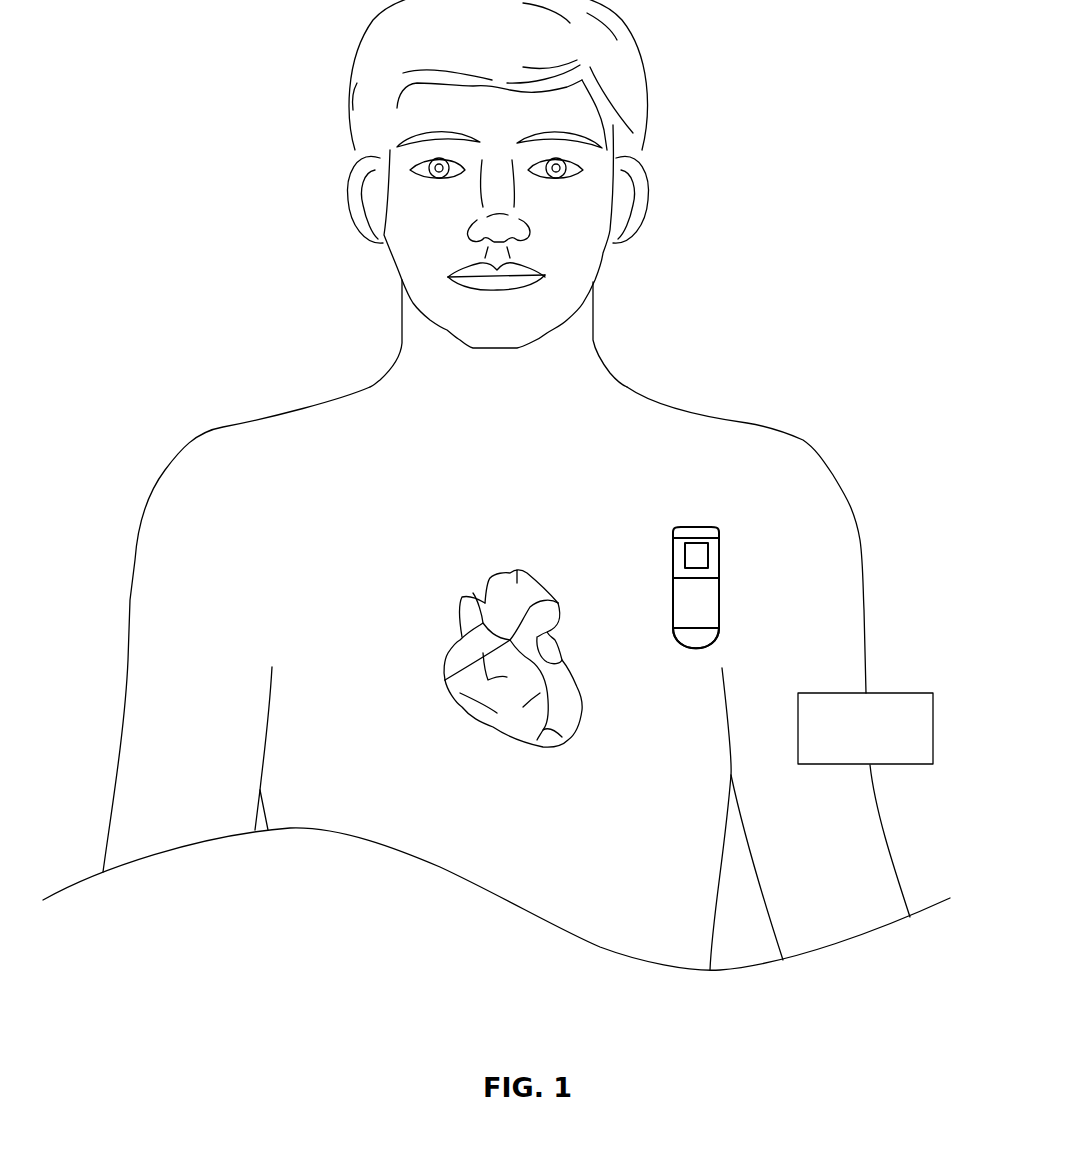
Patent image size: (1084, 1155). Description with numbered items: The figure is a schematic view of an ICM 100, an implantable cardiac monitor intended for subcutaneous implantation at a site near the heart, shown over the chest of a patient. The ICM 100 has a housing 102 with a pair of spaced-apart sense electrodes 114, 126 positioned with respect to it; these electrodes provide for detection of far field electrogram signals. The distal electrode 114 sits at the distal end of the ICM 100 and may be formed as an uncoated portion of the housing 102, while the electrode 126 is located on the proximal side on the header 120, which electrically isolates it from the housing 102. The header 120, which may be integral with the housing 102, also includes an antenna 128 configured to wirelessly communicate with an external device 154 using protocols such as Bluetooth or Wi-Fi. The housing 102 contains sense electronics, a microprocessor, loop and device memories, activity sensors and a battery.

The ICM 100 is at (709, 592).
The housing 102 is at (680, 605).
The sense electrode 114 is at (697, 652).
The header 120 is at (695, 519).
The sense electrode 126 is at (708, 557).
The antenna 128 is at (698, 527).
The external device 154 is at (913, 765).